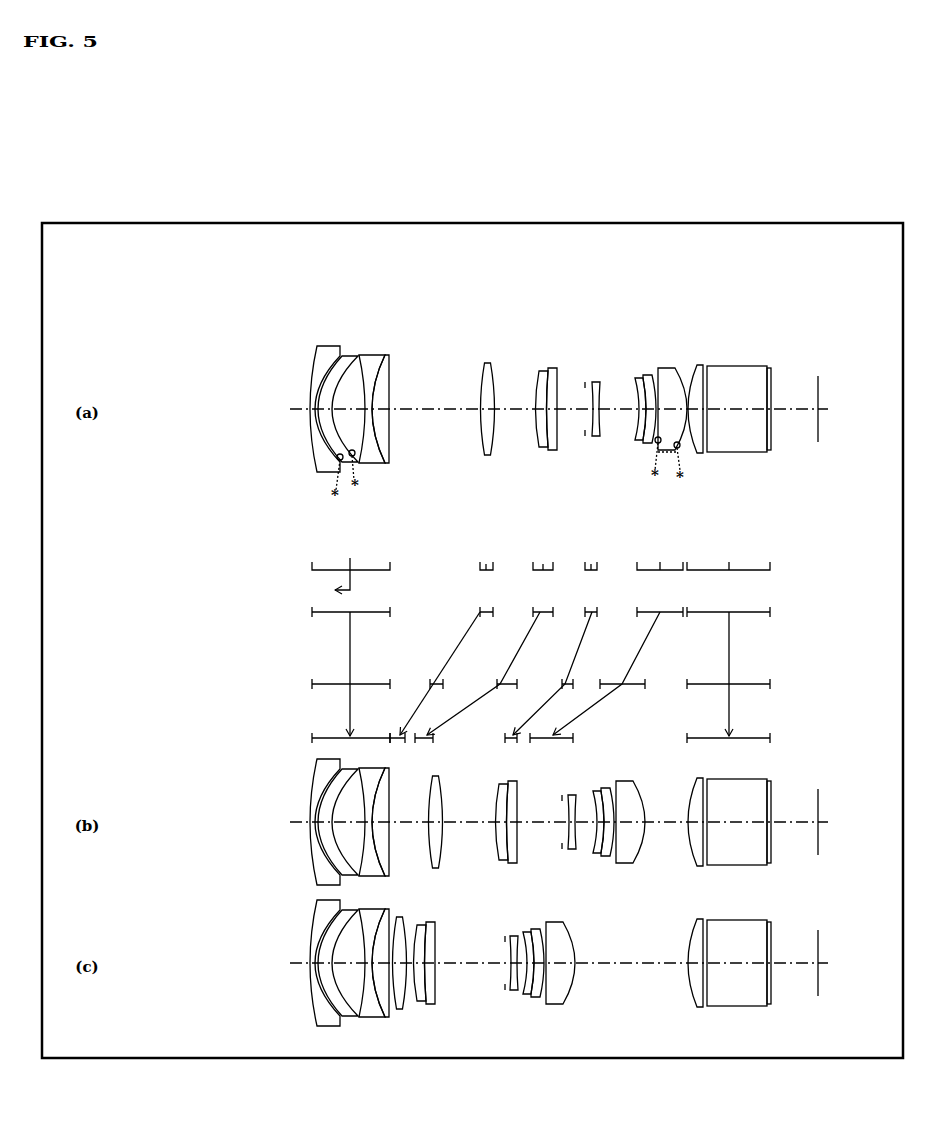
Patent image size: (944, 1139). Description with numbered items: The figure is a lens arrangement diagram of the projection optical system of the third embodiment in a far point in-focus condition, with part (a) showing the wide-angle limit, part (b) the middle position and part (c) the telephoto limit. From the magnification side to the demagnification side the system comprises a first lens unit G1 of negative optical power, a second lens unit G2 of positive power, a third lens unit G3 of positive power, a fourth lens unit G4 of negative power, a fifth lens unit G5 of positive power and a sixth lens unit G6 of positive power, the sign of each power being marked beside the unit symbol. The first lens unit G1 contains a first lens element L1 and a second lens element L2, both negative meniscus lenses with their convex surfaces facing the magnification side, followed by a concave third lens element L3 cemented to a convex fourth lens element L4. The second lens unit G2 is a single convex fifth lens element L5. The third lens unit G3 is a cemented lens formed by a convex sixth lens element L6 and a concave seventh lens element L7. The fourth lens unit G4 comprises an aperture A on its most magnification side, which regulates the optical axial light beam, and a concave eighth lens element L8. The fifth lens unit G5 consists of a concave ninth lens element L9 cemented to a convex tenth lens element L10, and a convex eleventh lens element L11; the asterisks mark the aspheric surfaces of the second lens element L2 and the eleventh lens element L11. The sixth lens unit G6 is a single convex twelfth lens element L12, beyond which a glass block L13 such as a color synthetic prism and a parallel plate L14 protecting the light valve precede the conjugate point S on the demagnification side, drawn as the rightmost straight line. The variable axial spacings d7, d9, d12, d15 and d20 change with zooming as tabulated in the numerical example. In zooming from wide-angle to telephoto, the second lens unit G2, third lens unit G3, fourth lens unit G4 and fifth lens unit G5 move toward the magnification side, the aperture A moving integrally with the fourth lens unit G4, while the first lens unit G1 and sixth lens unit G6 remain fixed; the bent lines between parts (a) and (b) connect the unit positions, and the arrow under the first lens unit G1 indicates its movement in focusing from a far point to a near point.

The first lens element L1 is at (330, 352).
The second lens element L2 is at (348, 358).
The third lens element L3 is at (370, 360).
The fourth lens element L4 is at (385, 357).
The fifth lens element L5 is at (487, 365).
The sixth lens element L6 is at (541, 372).
The seventh lens element L7 is at (548, 370).
The aperture A is at (585, 381).
The eighth lens element L8 is at (595, 381).
The ninth lens element L9 is at (638, 380).
The tenth lens element L10 is at (648, 376).
The eleventh lens element L11 is at (670, 370).
The twelfth lens element L12 is at (698, 368).
The glass block L13 is at (737, 368).
The parallel plate L14 is at (769, 367).
The conjugate point on the demagnification side S is at (822, 397).
The variable air space d7 is at (433, 409).
The variable air space d9 is at (514, 409).
The variable air space d12 is at (572, 409).
The variable air space d15 is at (618, 409).
The variable air space d20 is at (692, 443).
The first lens unit G1 is at (351, 642).
The second lens unit G2 is at (452, 642).
The third lens unit G3 is at (494, 642).
The fourth lens unit G4 is at (562, 642).
The fifth lens unit G5 is at (609, 642).
The sixth lens unit G6 is at (728, 642).